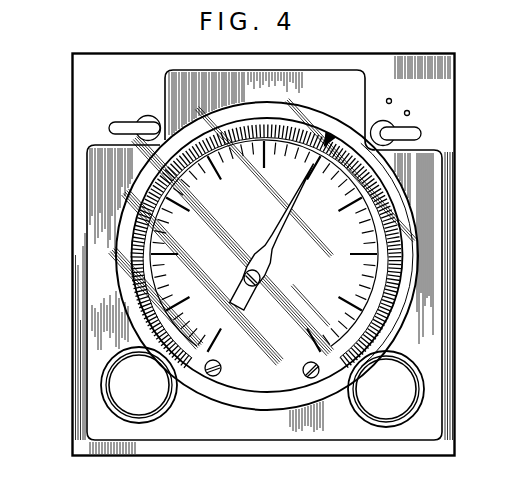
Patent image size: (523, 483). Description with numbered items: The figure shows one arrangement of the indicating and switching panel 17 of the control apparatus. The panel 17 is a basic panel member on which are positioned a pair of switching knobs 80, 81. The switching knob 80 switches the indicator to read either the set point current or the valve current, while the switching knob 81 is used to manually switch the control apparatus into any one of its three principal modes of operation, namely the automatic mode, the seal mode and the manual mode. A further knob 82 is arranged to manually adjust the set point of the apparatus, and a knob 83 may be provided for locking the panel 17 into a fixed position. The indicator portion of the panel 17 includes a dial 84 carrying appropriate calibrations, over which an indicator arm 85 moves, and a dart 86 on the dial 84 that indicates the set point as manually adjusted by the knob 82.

The indicating and switching panel 17 is at (73, 247).
The switching knob 80 is at (151, 125).
The switching knob 81 is at (378, 127).
The knob 82 is at (382, 398).
The knob 83 is at (147, 392).
The dial 84 is at (322, 241).
The indicator arm 85 is at (272, 238).
The dart 86 is at (328, 136).